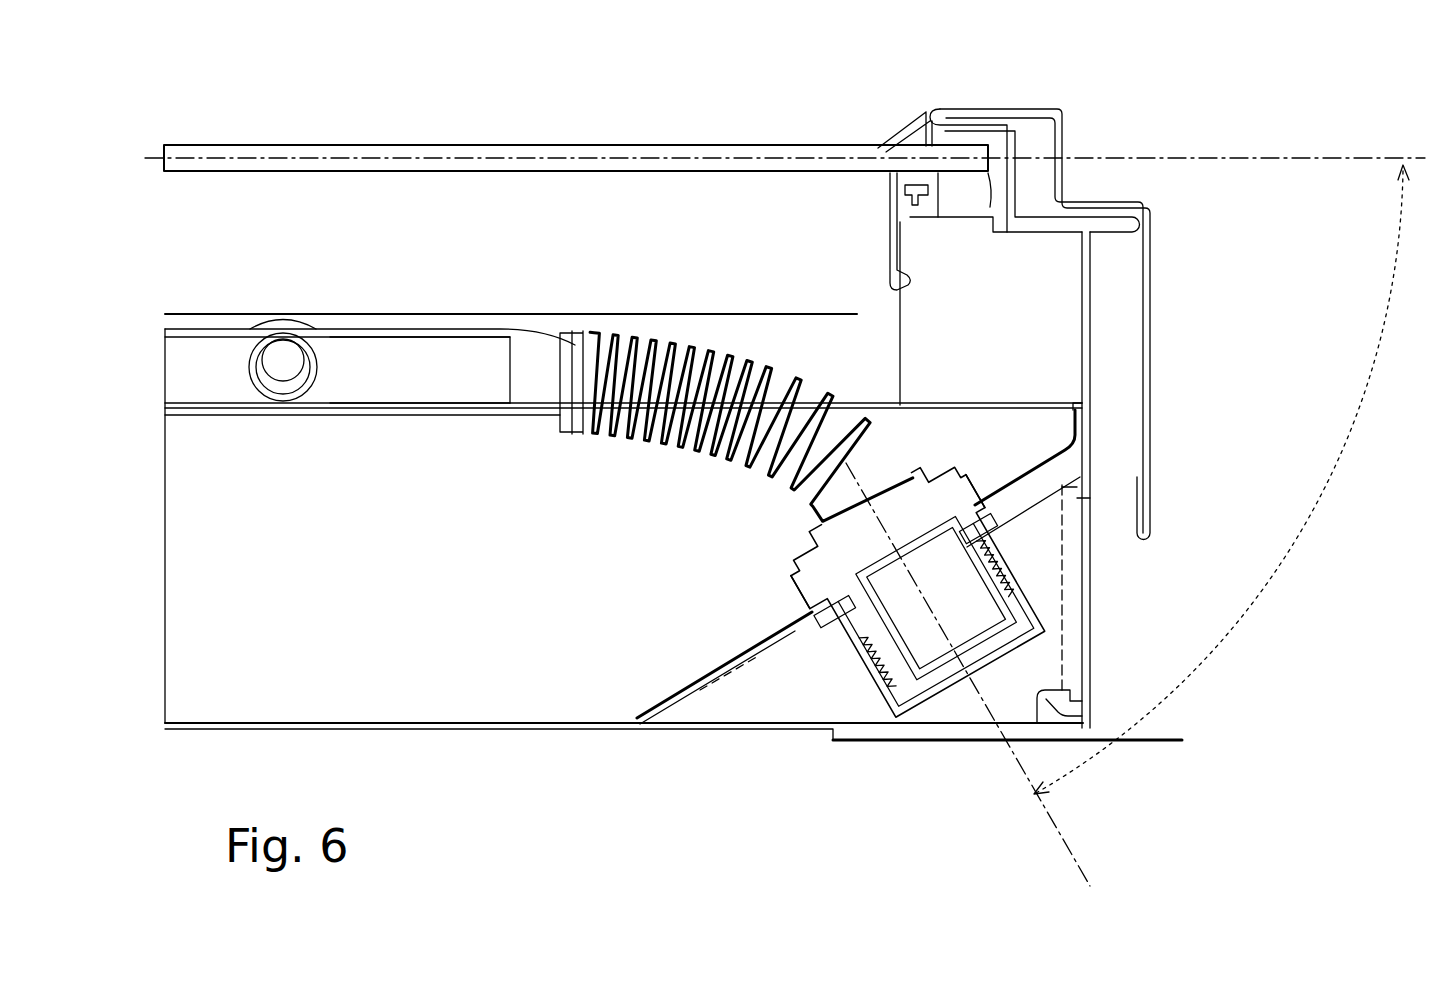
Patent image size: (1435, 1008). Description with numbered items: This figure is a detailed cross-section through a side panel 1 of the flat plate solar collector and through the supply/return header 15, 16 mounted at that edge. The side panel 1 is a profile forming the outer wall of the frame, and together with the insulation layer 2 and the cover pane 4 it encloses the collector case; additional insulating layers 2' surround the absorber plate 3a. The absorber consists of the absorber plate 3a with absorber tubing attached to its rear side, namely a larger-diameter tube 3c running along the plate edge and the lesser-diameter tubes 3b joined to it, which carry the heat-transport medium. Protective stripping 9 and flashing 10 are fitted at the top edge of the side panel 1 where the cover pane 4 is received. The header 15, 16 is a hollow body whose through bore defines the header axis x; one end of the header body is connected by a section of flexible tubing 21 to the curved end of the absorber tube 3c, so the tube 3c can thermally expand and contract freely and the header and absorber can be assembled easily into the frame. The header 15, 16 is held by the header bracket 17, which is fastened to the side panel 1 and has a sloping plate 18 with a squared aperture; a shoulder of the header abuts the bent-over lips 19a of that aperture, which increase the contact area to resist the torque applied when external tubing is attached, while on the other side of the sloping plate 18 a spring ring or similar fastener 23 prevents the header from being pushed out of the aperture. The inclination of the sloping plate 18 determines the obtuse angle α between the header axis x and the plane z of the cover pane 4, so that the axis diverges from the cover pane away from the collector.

The side panel 1 is at (1093, 424).
The insulation layer 2 is at (673, 534).
The additional insulating layer 2' is at (954, 313).
The absorber plate 3a is at (527, 315).
The lesser diameter absorber tube 3b is at (287, 353).
The larger diameter absorber tube 3c is at (460, 352).
The cover pane 4 is at (359, 148).
The protective stripping 9 is at (928, 130).
The flashing 10 is at (1063, 122).
The supply header 15 is at (918, 641).
The return header 16 is at (888, 642).
The header bracket 17 is at (1045, 562).
The sloping plate 18 is at (682, 690).
The lip 19a is at (808, 593).
The flexible tubing 21 is at (708, 348).
The clamp 23 is at (830, 623).